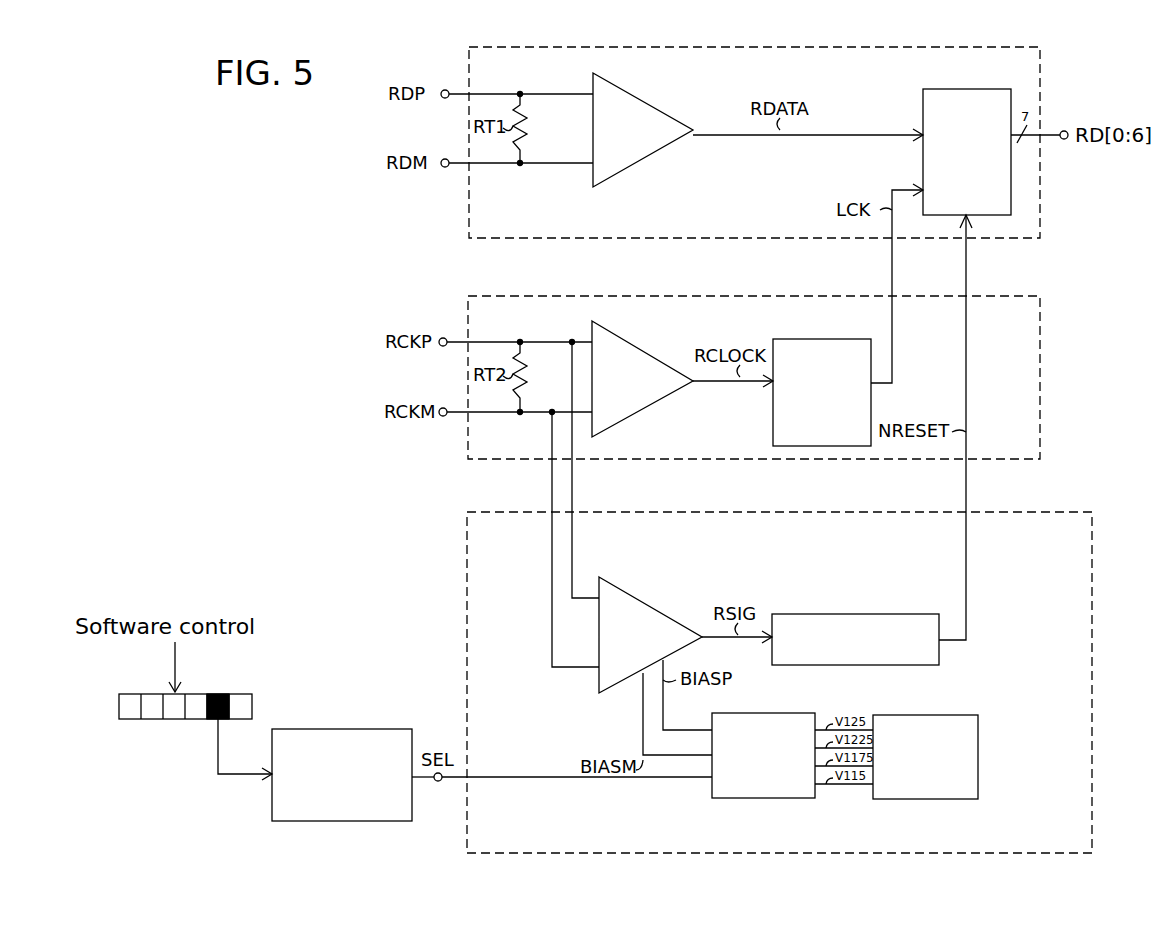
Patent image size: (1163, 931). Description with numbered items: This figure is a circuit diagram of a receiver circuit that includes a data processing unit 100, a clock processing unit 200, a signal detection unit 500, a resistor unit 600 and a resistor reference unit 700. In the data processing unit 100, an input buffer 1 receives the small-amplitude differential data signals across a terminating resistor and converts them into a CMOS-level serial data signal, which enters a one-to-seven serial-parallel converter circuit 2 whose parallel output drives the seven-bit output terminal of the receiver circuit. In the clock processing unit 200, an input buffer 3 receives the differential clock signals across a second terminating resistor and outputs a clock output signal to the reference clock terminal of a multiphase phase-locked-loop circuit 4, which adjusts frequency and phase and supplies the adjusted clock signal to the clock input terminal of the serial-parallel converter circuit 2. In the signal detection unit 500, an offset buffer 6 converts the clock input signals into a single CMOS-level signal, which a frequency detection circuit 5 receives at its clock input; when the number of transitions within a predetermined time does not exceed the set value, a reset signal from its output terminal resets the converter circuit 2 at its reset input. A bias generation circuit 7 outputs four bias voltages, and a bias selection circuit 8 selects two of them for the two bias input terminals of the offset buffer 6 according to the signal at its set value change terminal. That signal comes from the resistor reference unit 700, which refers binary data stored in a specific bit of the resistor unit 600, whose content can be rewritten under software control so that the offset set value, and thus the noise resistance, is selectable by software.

The input buffer 1 is at (651, 108).
The 1:7 serial-parallel converter circuit 2 is at (923, 106).
The input buffer 3 is at (651, 357).
The multiphase PLL circuit 4 is at (813, 339).
The frequency detection circuit 5 is at (787, 614).
The offset buffer 6 is at (656, 610).
The bias generation circuit 7 is at (943, 799).
The bias selection circuit 8 is at (763, 713).
The data processing unit 100 is at (490, 47).
The clock processing unit 200 is at (490, 296).
The signal detection unit 500 is at (592, 512).
The resistor unit 600 is at (252, 708).
The resistor reference unit 700 is at (272, 797).